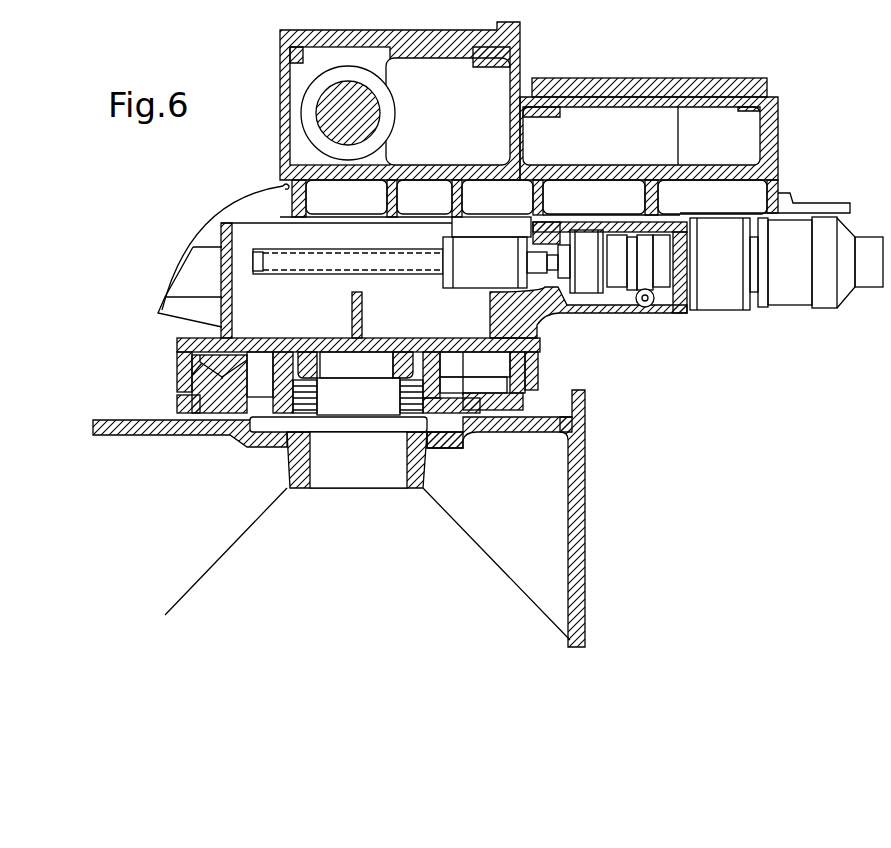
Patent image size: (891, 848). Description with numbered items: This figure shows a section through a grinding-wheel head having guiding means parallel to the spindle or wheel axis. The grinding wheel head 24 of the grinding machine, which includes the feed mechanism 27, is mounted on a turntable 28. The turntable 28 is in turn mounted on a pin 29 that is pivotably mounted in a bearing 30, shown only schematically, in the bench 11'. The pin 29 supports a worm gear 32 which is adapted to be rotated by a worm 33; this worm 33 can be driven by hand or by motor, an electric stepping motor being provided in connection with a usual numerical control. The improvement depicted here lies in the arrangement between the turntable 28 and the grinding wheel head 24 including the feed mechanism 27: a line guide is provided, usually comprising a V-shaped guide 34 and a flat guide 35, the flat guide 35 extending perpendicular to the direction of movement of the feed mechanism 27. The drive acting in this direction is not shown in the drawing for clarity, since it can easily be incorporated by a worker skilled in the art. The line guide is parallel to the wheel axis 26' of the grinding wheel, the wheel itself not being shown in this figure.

The bench 11' is at (358, 518).
The grinding wheel head 24 is at (630, 90).
The wheel axis 26' is at (400, 101).
The feed mechanism 27 is at (654, 326).
The turntable 28 is at (180, 403).
The pin 29 is at (361, 375).
The bearing 30 is at (359, 470).
The worm gear 32 is at (315, 338).
The worm 33 is at (413, 338).
The V-shaped guide 34 is at (177, 356).
The flat guide 35 is at (537, 325).